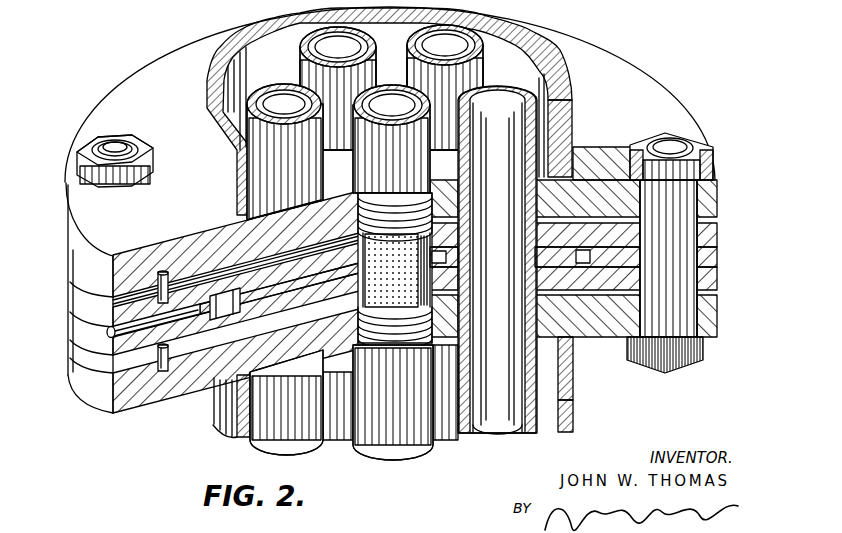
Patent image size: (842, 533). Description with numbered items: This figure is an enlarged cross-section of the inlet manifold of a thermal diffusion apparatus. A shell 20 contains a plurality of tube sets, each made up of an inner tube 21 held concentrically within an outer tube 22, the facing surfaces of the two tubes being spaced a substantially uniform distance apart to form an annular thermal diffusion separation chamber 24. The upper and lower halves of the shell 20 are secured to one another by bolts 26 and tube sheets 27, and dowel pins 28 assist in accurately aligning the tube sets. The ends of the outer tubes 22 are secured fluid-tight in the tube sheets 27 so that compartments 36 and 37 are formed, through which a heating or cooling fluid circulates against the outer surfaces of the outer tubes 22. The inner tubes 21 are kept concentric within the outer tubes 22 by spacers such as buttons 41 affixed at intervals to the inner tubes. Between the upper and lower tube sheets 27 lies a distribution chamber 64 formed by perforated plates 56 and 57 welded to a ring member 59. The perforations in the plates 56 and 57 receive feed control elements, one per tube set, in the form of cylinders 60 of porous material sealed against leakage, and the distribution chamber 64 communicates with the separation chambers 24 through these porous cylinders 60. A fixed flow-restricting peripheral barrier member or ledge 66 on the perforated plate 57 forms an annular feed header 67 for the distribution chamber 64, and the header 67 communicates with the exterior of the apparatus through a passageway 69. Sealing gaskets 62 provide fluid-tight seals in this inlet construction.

The shell 20 is at (574, 95).
The inner tube 21 is at (250, 92).
The outer tube 22 is at (345, 420).
The thermal diffusion separation chamber 24 is at (570, 110).
The bolts 26 is at (707, 167).
The tube sheets 27 is at (653, 90).
The dowel pins 28 is at (163, 280).
The compartment 36 is at (224, 98).
The compartment 37 is at (575, 422).
The buttons 41 is at (575, 385).
The perforated plate 56 is at (717, 230).
The perforated plate 57 is at (715, 285).
The ring member 59 is at (717, 250).
The porous cylinder 60 is at (550, 225).
The sealing gasket 62 is at (573, 178).
The distribution chamber 64 is at (583, 183).
The peripheral barrier member or ledge 66 is at (230, 297).
The annular feed header 67 is at (205, 303).
The passageway 69 is at (110, 330).